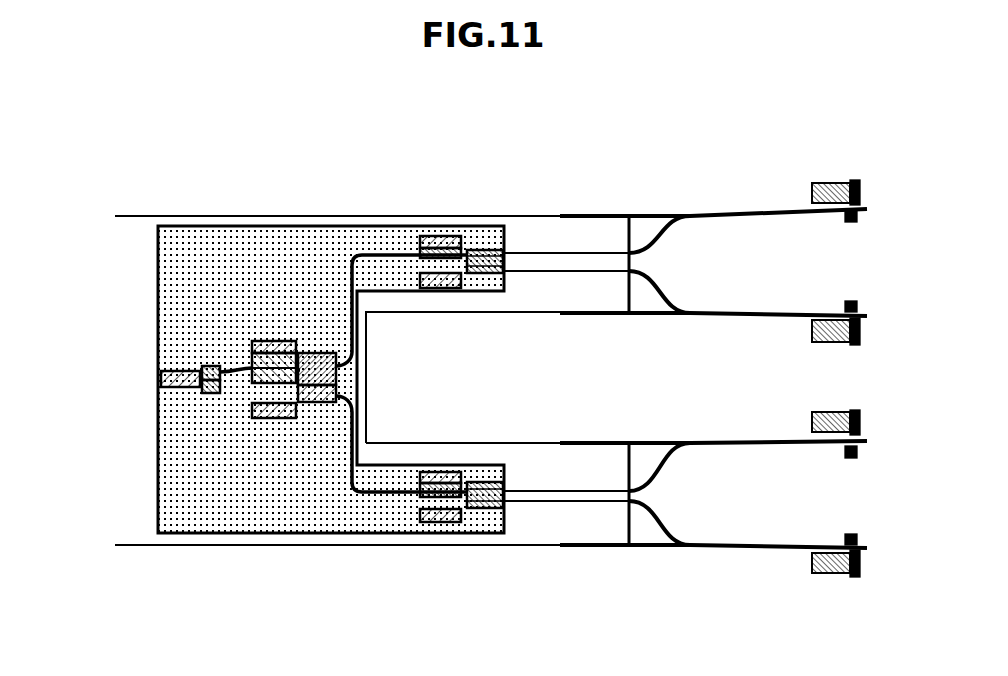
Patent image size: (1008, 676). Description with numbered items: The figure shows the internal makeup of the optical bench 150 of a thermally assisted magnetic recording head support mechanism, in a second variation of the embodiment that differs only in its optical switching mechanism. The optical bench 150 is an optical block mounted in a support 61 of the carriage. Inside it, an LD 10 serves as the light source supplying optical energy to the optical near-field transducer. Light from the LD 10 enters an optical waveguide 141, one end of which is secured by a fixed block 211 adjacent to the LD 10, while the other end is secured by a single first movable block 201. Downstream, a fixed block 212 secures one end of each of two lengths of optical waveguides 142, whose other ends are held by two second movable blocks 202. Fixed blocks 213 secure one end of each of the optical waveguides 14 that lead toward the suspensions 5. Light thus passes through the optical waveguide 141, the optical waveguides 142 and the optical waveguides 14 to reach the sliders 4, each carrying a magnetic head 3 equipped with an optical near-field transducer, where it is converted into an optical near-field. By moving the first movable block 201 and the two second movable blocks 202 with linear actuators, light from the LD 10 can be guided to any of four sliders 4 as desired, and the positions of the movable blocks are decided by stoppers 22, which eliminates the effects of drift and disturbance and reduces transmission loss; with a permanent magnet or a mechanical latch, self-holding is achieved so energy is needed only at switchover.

The magnetic head 3 is at (855, 180).
The slider 4 is at (820, 183).
The suspension 5 is at (718, 215).
The LD 10 is at (175, 365).
The optical waveguide 14 is at (683, 230).
The stopper 22 is at (272, 340).
The support 61 is at (136, 520).
The optical waveguide 141 is at (237, 365).
The optical waveguides 142 is at (357, 275).
The optical bench 150 is at (177, 250).
The first movable block 201 is at (218, 393).
The second movable blocks 202 is at (417, 262).
The fixed block 211 is at (212, 365).
The fixed block 212 is at (313, 352).
The fixed blocks 213 is at (487, 250).